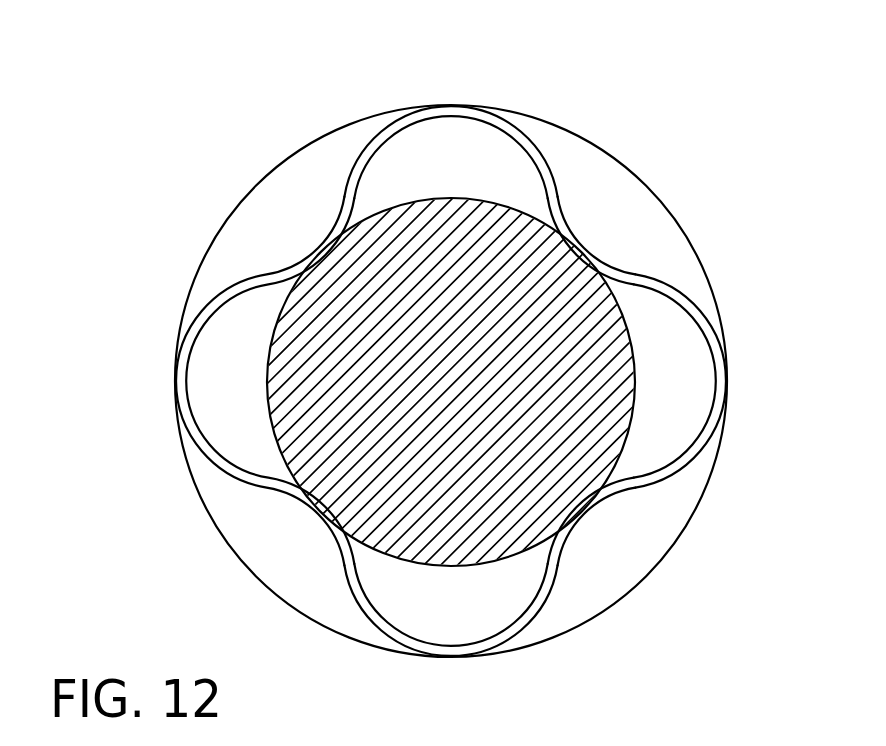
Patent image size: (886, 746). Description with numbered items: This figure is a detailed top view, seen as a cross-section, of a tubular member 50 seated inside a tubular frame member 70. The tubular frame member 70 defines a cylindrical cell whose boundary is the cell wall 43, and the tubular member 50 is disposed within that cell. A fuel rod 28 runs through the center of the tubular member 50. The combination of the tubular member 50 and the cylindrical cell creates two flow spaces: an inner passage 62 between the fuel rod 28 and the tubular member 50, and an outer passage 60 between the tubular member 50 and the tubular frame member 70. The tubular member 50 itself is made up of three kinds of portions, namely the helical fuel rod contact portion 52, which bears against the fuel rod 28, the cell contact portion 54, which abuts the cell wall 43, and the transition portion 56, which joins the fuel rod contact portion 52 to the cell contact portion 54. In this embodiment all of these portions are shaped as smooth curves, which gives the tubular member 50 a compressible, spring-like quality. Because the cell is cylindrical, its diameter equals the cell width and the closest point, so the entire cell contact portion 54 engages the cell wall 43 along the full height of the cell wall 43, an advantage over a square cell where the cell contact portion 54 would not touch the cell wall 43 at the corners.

The tubular frame member 70 is at (273, 167).
The fuel rod 28 is at (497, 296).
The tubular member 50 is at (372, 145).
The helical fuel rod contact portion 52 is at (580, 517).
The cell contact portion 54 is at (727, 392).
The transition portion 56 is at (676, 487).
The outer passage 60 is at (638, 247).
The inner passage 62 is at (665, 357).
The cell wall 43 is at (187, 284).